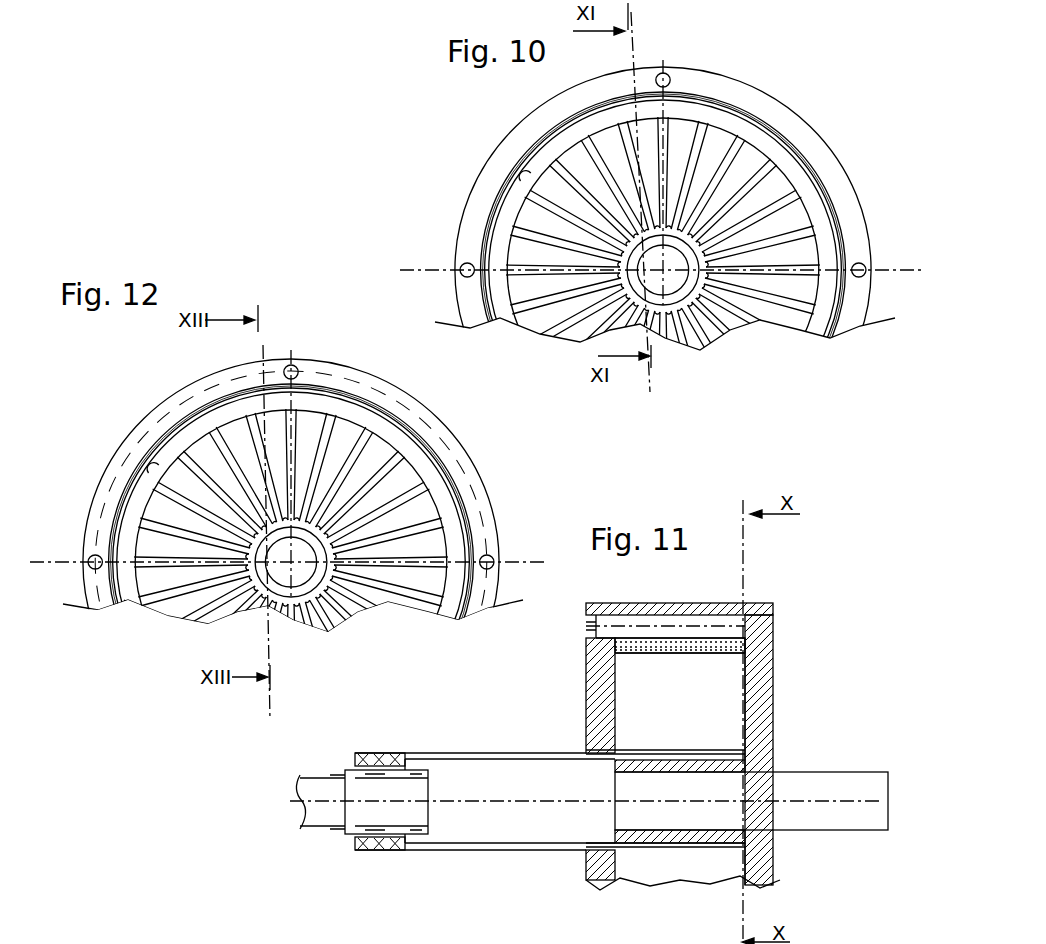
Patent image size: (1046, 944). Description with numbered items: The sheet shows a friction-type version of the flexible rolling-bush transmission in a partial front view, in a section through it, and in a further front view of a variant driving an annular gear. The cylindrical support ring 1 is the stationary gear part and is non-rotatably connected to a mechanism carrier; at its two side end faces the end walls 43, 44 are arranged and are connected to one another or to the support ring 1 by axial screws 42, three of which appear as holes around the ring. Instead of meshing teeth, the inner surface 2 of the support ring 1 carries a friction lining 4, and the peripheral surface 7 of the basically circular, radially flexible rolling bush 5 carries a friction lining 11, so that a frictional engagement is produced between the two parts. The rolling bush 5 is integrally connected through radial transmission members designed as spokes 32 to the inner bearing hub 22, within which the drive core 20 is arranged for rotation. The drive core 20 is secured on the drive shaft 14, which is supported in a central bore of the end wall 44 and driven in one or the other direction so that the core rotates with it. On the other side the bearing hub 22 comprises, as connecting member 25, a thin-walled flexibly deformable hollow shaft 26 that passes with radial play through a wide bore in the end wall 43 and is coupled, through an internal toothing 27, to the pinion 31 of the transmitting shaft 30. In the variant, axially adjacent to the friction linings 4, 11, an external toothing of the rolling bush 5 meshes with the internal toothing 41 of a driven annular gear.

In FIG. 10, the support ring 1 is at (765, 92).
In FIG. 12, the support ring 1 is at (390, 388).
In FIG. 11, the support ring 1 is at (650, 600).
In FIG. 10, the inner surface 2 is at (833, 220).
In FIG. 12, the inner surface 2 is at (462, 512).
In FIG. 10, the friction lining 4 is at (780, 130).
In FIG. 12, the friction lining 4 is at (405, 428).
In FIG. 11, the friction lining 4 is at (715, 656).
In FIG. 10, the rolling bush 5 is at (520, 122).
In FIG. 12, the rolling bush 5 is at (150, 420).
In FIG. 11, the rolling bush 5 is at (745, 650).
In FIG. 10, the peripheral surface 7 is at (520, 182).
In FIG. 12, the peripheral surface 7 is at (148, 474).
In FIG. 10, the friction lining 11 is at (530, 266).
In FIG. 12, the friction lining 11 is at (157, 558).
In FIG. 11, the friction lining 11 is at (643, 656).
In FIG. 10, the drive shaft 14 is at (740, 320).
In FIG. 12, the drive shaft 14 is at (365, 612).
In FIG. 11, the drive shaft 14 is at (848, 780).
In FIG. 10, the drive core 20 is at (666, 332).
In FIG. 12, the drive core 20 is at (293, 624).
In FIG. 11, the drive core 20 is at (735, 766).
In FIG. 10, the bearing hub 22 is at (703, 335).
In FIG. 12, the bearing hub 22 is at (330, 625).
In FIG. 11, the bearing hub 22 is at (705, 750).
In FIG. 11, the connecting member 25 is at (503, 748).
In FIG. 11, the hollow shaft 26 is at (505, 852).
In FIG. 11, the internal toothing 27 is at (356, 846).
In FIG. 11, the transmitting shaft 30 is at (322, 785).
In FIG. 11, the pinion 31 is at (420, 775).
In FIG. 10, the spokes 32 is at (523, 216).
In FIG. 12, the spokes 32 is at (150, 510).
In FIG. 11, the spokes 32 is at (725, 712).
In FIG. 12, the internal toothing 41 is at (122, 600).
In FIG. 10, the axial screws 42 is at (667, 74).
In FIG. 12, the axial screws 42 is at (296, 366).
In FIG. 11, the axial screws 42 is at (607, 604).
In FIG. 11, the end wall 43 is at (590, 672).
In FIG. 11, the end wall 44 is at (775, 665).